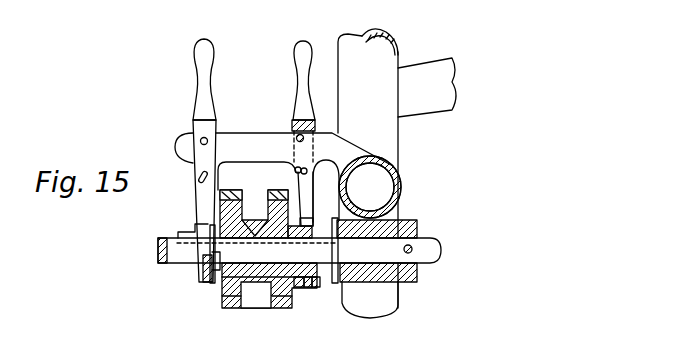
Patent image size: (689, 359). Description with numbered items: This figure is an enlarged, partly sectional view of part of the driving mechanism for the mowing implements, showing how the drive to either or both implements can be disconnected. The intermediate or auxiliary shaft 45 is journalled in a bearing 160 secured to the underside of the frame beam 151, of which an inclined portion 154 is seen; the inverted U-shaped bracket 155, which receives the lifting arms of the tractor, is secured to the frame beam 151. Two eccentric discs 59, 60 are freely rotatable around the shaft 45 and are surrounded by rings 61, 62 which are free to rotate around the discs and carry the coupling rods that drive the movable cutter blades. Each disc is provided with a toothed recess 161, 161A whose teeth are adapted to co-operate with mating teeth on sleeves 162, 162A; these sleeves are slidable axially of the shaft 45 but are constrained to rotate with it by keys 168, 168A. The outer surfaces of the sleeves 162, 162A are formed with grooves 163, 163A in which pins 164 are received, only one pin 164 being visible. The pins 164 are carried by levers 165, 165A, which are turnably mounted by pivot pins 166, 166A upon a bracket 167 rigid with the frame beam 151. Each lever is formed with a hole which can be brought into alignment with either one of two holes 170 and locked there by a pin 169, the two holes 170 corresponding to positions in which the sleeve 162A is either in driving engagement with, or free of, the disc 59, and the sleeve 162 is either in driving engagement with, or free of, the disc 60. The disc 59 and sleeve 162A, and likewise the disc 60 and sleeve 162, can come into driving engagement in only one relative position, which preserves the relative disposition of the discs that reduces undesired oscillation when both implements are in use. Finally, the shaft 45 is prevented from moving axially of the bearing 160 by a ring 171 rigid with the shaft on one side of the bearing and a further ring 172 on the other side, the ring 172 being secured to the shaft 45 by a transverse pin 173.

The intermediate shaft 45 is at (160, 249).
The eccentric disc 59 is at (217, 302).
The eccentric disc 60 is at (303, 299).
The ring 61 is at (227, 310).
The ring 62 is at (280, 313).
The frame beam 151 is at (410, 192).
The inclined portion 154 is at (378, 309).
The inverted U-shaped bracket 155 is at (392, 60).
The bearing 160 is at (400, 288).
The toothed recess 161 is at (238, 312).
The toothed recess 161A is at (256, 295).
The sleeve 162 is at (295, 281).
The sleeve 162A is at (202, 285).
The groove 163 is at (211, 288).
The groove 163A is at (315, 289).
The pin 164 is at (203, 272).
The lever 165 is at (200, 56).
The lever 165A is at (298, 65).
The pivot pin 166 is at (207, 139).
The pivot pin 166A is at (287, 137).
The bracket 167 is at (267, 143).
The key 168 is at (185, 237).
The key 168A is at (316, 199).
The locking pin 169 is at (199, 178).
The holes 170 is at (307, 193).
The ring 171 is at (334, 285).
The ring 172 is at (418, 228).
The transverse pin 173 is at (411, 250).